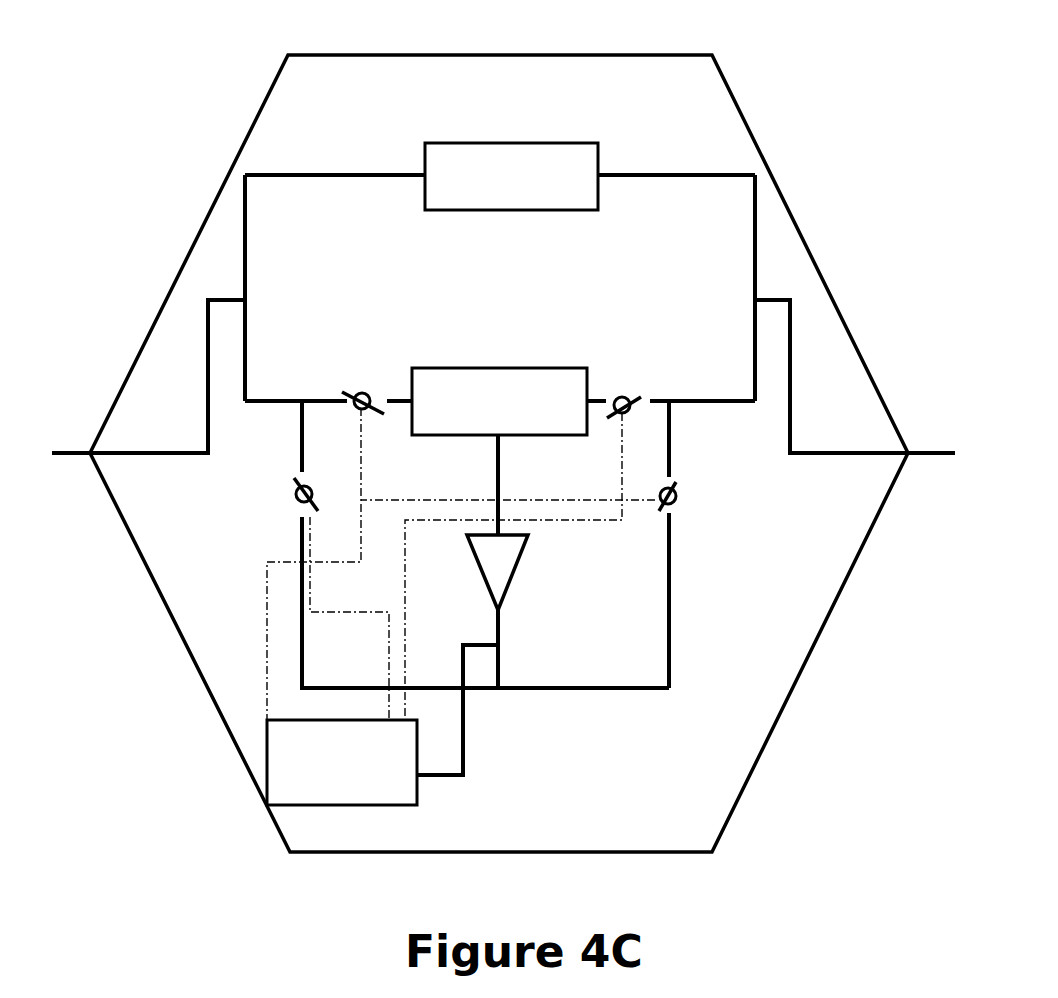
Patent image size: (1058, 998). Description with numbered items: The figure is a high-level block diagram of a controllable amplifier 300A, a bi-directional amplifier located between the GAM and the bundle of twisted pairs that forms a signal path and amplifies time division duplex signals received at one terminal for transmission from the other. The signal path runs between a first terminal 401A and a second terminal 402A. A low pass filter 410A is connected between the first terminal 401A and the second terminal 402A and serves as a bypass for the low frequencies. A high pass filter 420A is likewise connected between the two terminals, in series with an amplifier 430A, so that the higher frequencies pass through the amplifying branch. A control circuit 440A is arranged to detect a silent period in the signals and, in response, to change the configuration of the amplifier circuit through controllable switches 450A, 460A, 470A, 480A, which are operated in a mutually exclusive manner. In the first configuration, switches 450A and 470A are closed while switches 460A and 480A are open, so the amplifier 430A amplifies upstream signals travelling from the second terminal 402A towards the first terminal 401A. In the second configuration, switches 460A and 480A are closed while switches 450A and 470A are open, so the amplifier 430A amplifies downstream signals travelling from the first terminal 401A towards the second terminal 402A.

The controllable amplifier 300A is at (380, 53).
The first terminal 401A is at (70, 452).
The second terminal 402A is at (952, 450).
The low pass filter 410A is at (518, 143).
The high pass filter 420A is at (523, 367).
The amplifier 430A is at (527, 542).
The control circuit 440A is at (418, 787).
The controllable switch 450A is at (294, 498).
The controllable switch 460A is at (363, 391).
The controllable switch 470A is at (623, 396).
The controllable switch 480A is at (680, 497).